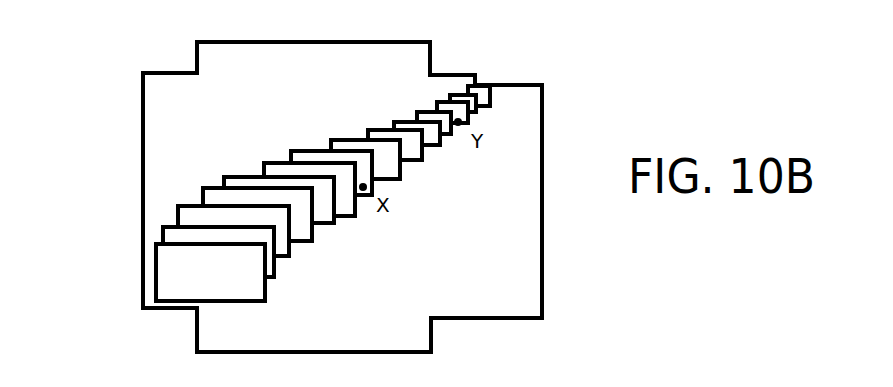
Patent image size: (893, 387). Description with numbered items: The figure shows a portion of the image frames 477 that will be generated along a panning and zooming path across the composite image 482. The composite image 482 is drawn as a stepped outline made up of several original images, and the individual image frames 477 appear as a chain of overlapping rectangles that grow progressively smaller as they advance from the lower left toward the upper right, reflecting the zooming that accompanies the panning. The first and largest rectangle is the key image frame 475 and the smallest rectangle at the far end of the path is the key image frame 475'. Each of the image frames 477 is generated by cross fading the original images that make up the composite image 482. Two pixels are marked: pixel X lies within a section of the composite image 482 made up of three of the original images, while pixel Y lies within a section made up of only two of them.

The composite image 482 is at (141, 102).
The image frames 477 is at (323, 150).
The key image frame 475 is at (147, 249).
The key image frame 475' is at (539, 69).